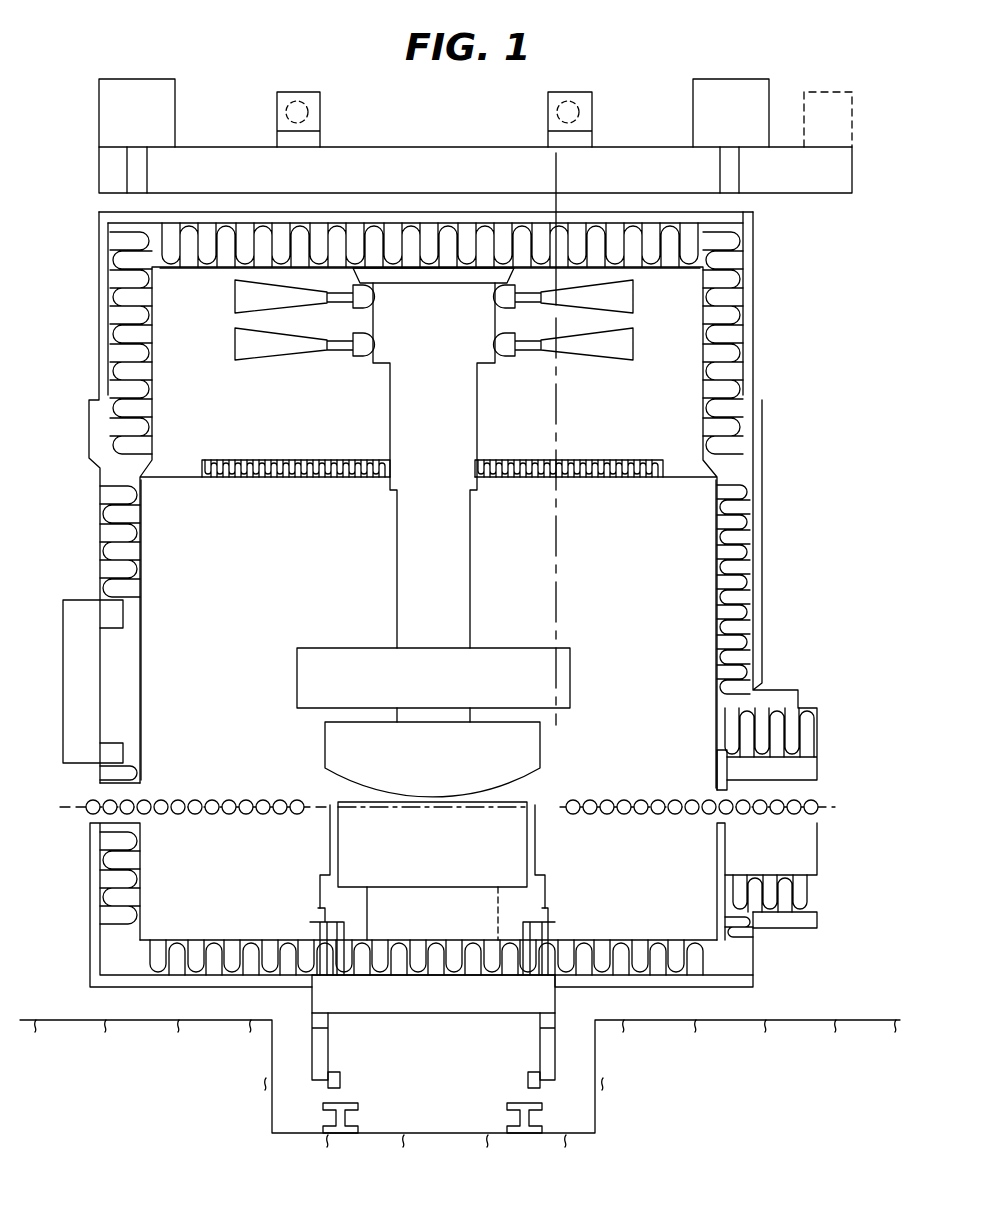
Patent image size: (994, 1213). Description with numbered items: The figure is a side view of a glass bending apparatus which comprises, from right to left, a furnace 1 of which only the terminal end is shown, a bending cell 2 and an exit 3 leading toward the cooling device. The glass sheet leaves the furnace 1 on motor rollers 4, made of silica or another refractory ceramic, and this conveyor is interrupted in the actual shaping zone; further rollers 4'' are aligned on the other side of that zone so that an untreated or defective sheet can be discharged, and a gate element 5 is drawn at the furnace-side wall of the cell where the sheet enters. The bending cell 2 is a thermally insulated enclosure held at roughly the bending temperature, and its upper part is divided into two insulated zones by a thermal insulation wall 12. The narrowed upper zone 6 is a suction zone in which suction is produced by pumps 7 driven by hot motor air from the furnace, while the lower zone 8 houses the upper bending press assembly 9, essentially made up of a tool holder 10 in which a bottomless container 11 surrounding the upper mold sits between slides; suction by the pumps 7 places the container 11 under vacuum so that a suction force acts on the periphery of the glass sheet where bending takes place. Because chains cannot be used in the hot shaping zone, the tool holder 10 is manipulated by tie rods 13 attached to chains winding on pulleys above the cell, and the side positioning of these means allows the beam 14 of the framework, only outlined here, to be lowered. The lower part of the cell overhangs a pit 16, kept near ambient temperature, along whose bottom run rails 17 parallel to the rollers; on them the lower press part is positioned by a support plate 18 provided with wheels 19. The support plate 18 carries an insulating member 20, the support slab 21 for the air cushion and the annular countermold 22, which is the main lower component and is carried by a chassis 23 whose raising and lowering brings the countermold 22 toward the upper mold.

The furnace 1 is at (778, 853).
The bending cell 2 is at (265, 563).
The exit 3 is at (138, 793).
The motor rollers 4 is at (710, 787).
The further rollers 4'' is at (195, 840).
The gate valve 5 is at (717, 770).
The upper zone 6 is at (668, 441).
The pumps 7 is at (607, 356).
The lower zone 8 is at (675, 603).
The upper bending press assembly 9 is at (290, 712).
The tool holder 10 is at (503, 657).
The bottomless container 11 is at (535, 745).
The thermal insulation wall 12 is at (517, 460).
The tie rods 13 is at (557, 540).
The beam 14 is at (632, 157).
The pit 16 is at (462, 1068).
The rails 17 is at (357, 1107).
The support plate 18 is at (492, 1007).
The wheels 19 is at (340, 1078).
The insulating member 20 is at (395, 958).
The support slab 21 is at (408, 810).
The annular countermold 22 is at (325, 805).
The chassis 23 is at (545, 878).